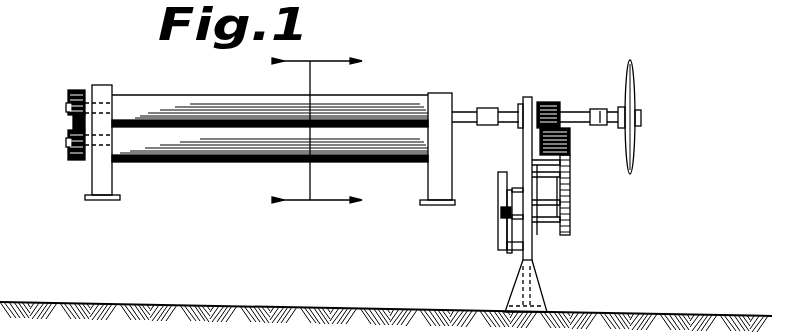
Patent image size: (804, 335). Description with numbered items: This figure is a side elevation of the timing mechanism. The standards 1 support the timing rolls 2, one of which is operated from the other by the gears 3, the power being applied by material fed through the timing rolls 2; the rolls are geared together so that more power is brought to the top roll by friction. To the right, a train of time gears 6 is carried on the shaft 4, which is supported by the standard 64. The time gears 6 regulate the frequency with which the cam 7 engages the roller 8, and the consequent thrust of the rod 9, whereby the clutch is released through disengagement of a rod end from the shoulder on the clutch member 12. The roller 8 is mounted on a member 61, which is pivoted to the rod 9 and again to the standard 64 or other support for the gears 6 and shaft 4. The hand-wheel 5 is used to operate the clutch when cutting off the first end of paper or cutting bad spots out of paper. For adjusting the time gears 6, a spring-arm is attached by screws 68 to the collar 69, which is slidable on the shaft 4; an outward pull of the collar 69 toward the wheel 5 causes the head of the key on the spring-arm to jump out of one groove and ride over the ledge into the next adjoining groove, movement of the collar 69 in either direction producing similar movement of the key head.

The standards 1 is at (100, 168).
The timing rolls 2 is at (147, 133).
The gears 3 is at (68, 150).
The shaft 4 is at (467, 112).
The hand-wheel 5 is at (636, 162).
The time gears 6 is at (553, 101).
The cam 7 is at (502, 172).
The roller 8 is at (498, 195).
The rod 9 is at (505, 212).
The clutch member 12 is at (333, 134).
The member 61 is at (507, 245).
The standard 64 is at (532, 262).
The screws 68 is at (595, 109).
The collar 69 is at (603, 109).